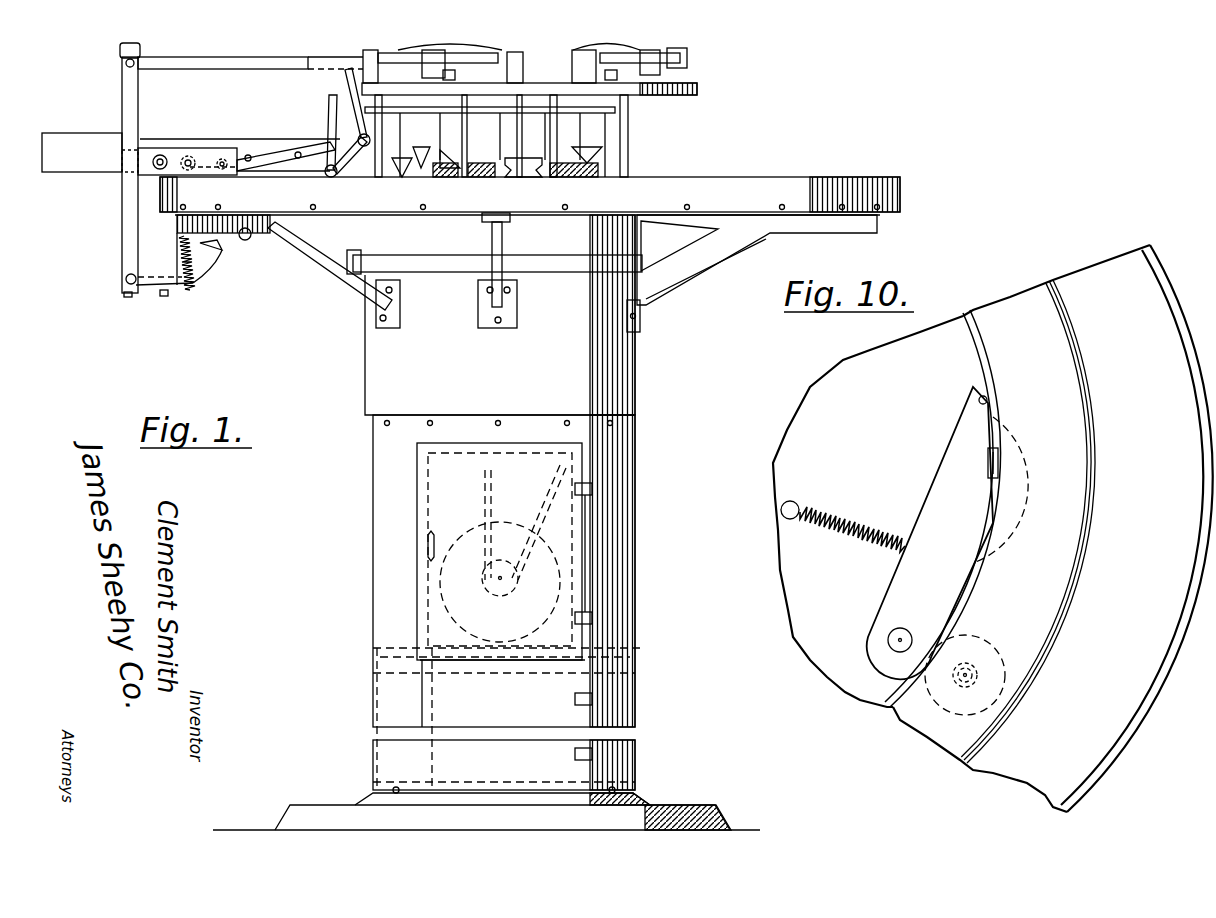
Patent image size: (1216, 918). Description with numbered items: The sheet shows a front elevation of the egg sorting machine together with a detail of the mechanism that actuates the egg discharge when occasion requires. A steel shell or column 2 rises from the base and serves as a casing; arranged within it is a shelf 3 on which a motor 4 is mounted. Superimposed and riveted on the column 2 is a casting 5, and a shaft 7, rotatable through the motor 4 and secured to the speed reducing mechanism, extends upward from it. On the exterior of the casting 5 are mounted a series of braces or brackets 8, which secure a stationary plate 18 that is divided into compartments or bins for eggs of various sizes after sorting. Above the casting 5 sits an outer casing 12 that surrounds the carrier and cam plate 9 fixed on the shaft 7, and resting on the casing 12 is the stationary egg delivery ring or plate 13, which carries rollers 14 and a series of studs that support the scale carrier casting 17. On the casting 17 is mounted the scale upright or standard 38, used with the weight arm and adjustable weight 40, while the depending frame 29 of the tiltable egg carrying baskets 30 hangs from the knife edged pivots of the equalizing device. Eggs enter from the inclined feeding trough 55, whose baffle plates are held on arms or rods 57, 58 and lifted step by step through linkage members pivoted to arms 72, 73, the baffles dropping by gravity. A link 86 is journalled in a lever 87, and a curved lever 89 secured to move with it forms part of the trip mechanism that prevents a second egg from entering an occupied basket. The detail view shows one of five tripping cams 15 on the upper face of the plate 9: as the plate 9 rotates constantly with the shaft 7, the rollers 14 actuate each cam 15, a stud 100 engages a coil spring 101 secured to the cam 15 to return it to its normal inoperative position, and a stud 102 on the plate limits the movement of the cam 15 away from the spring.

In FIG. 1, the steel shell or column 2 is at (626, 568).
In FIG. 1, the shelf 3 is at (640, 652).
In FIG. 1, the motor 4 is at (516, 622).
In FIG. 1, the casting 5 is at (632, 362).
In FIG. 1, the shaft 7 is at (690, 806).
In FIG. 1, the braces or brackets 8 is at (338, 280).
In FIG. 10, the carrier and cam plate 9 is at (887, 508).
In FIG. 1, the outer casing 12 is at (625, 236).
In FIG. 10, the egg delivery ring or plate 13 is at (1053, 528).
In FIG. 10, the rollers 14 is at (990, 660).
In FIG. 10, the tripping cam 15 is at (930, 533).
In FIG. 1, the scale carrier casting 17 is at (684, 96).
In FIG. 1, the plate divided into bins 18 is at (800, 190).
In FIG. 1, the depending frame 29 is at (500, 142).
In FIG. 1, the egg carrying baskets 30 is at (482, 162).
In FIG. 1, the scale upright or standard 38 is at (688, 55).
In FIG. 1, the adjustable weight 40 is at (688, 75).
In FIG. 1, the feeding trough 55 is at (78, 166).
In FIG. 1, the arm or rod 57 is at (328, 104).
In FIG. 1, the arm or rod 58 is at (358, 138).
In FIG. 1, the arm 72 is at (247, 154).
In FIG. 1, the arm 73 is at (283, 152).
In FIG. 1, the link 86 is at (232, 64).
In FIG. 1, the lever 87 is at (122, 98).
In FIG. 1, the curved lever 89 is at (182, 290).
In FIG. 10, the stud 100 is at (796, 505).
In FIG. 10, the coil spring 101 is at (866, 530).
In FIG. 10, the stud 102 is at (986, 398).